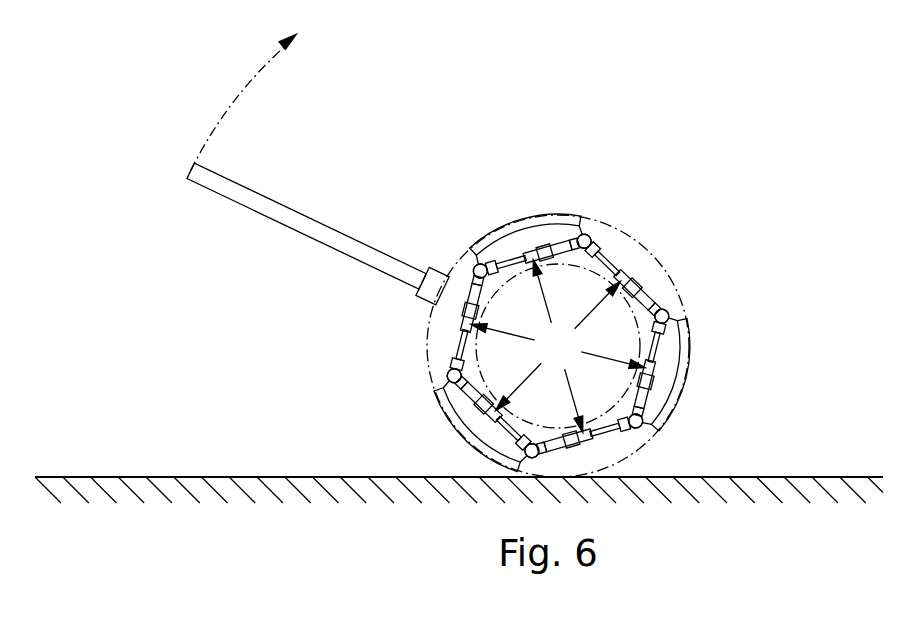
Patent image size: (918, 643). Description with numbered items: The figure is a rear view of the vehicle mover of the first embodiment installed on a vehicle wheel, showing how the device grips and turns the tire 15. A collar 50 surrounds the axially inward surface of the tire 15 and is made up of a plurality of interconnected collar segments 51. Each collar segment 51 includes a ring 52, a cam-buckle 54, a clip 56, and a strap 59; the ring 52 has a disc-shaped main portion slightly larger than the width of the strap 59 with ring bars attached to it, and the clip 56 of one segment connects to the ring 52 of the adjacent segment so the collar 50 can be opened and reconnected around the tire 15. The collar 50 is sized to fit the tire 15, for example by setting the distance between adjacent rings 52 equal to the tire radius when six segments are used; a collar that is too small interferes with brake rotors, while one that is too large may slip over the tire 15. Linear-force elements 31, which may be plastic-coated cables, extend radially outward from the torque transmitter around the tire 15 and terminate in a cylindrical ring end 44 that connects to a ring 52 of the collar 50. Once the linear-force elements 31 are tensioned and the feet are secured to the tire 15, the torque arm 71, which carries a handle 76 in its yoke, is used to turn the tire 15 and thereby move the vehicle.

The tire 15 is at (428, 360).
The linear-force elements 31 is at (553, 213).
The ring end 44 is at (585, 237).
The collar 50 is at (560, 150).
The collar segment 51 is at (558, 346).
The ring 52 is at (588, 253).
The cam-buckle 54 is at (625, 282).
The clip 56 is at (658, 305).
The strap 59 is at (603, 258).
The torque arm 71 is at (431, 250).
The handle 76 is at (288, 205).